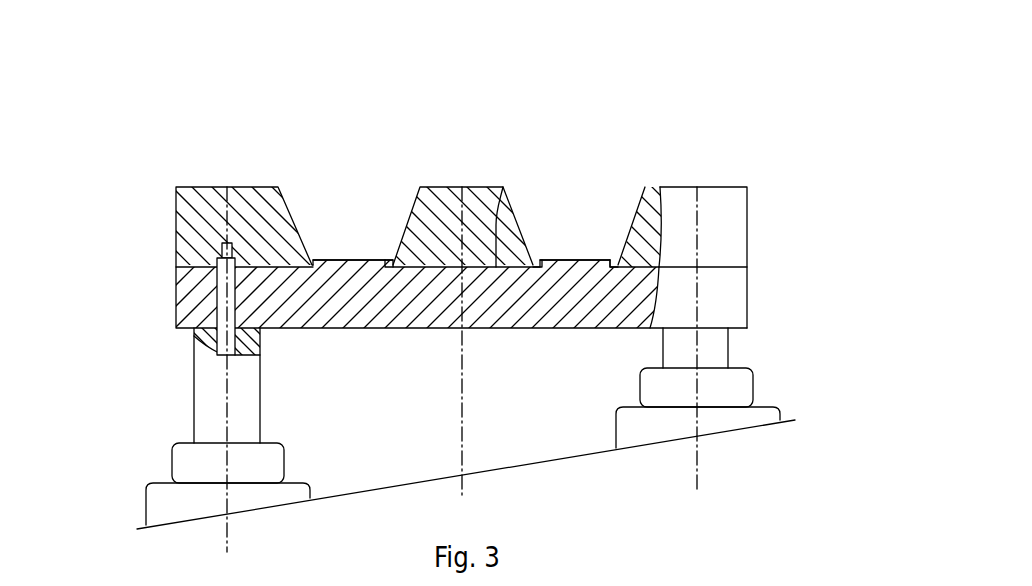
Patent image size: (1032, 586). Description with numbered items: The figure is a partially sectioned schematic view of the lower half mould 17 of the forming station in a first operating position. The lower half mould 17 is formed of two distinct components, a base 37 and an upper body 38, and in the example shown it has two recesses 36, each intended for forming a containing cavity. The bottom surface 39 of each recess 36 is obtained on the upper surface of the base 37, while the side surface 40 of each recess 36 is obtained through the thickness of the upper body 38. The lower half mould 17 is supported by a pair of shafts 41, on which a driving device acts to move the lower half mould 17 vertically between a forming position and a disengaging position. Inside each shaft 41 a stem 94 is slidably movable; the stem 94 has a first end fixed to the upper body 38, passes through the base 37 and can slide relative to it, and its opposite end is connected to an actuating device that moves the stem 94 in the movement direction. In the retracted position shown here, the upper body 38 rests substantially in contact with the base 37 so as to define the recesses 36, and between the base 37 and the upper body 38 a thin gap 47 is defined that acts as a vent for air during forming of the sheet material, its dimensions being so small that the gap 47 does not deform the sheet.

The lower half mould 17 is at (225, 102).
The recess 36 is at (294, 222).
The base 37 is at (730, 298).
The upper body 38 is at (728, 228).
The bottom surface 39 is at (341, 258).
The side surface 40 is at (393, 262).
The shaft 41 is at (194, 394).
The gap 47 is at (503, 187).
The stem 94 is at (213, 303).